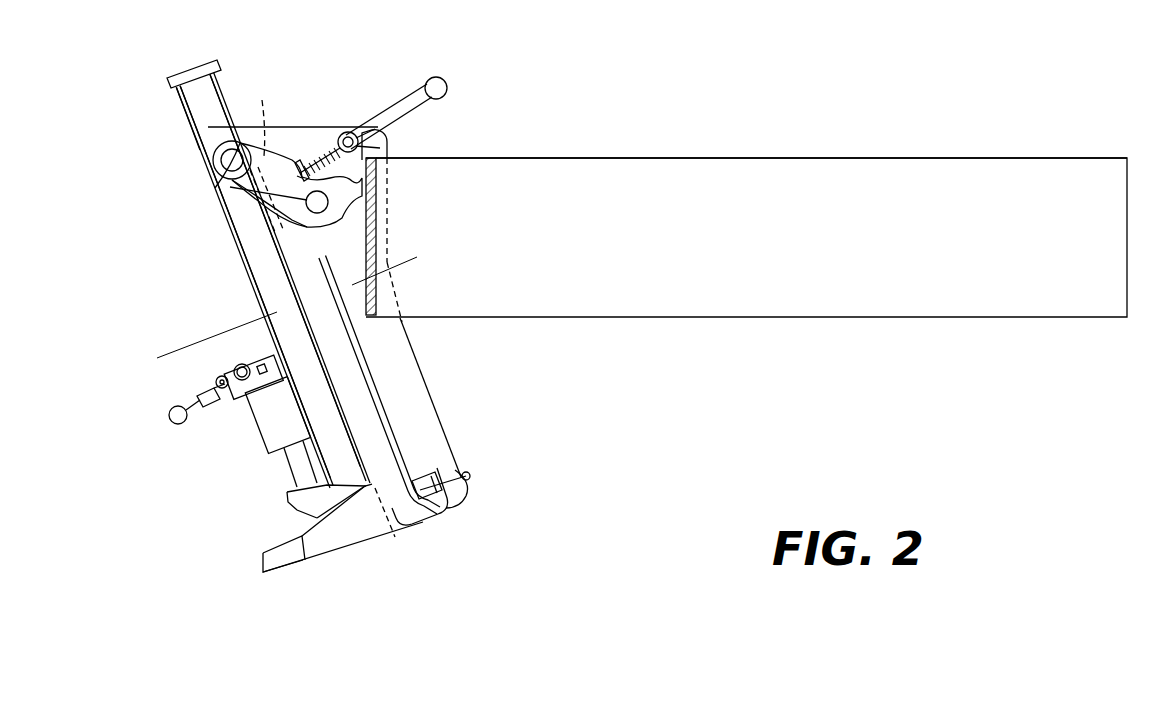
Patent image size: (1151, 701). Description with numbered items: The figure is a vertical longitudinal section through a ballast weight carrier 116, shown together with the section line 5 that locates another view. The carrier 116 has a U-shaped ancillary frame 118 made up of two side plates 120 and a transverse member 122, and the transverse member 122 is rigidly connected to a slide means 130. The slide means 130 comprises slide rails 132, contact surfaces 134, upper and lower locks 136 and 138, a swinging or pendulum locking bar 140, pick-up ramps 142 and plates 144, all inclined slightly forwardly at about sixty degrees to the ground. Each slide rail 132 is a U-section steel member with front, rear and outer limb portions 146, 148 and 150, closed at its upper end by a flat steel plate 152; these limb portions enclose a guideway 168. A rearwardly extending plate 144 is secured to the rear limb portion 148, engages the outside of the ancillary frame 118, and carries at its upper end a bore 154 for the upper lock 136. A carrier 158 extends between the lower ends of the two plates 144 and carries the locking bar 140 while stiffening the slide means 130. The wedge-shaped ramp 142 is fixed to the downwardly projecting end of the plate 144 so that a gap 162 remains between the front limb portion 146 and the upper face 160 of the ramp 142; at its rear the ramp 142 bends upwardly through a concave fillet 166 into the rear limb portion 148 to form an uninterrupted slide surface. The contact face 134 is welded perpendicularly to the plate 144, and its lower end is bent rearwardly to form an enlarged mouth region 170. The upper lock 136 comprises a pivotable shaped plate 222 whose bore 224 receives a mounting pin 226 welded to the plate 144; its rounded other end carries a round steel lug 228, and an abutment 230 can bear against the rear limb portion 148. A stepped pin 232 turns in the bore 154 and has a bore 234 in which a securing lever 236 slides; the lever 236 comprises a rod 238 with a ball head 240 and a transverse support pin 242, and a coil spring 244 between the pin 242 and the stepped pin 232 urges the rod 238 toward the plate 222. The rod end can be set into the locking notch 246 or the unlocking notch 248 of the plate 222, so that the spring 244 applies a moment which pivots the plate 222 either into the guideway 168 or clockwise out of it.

The section line 5- 5 is at (157, 380).
The ballast weight carrier 116 is at (723, 155).
The ancillary frame 118 is at (928, 156).
The side plate 120 is at (884, 254).
The transverse member 122 is at (378, 305).
The slide means 130 is at (208, 212).
The slide rail 132 is at (222, 76).
The contact surface 134 is at (378, 403).
The upper lock 136 is at (362, 106).
The lower lock 138 is at (262, 426).
The pendulum locking bar 140 is at (490, 523).
The pick-up ramp 142 is at (280, 572).
The plate 144 is at (313, 127).
The front limb portion 146 is at (254, 296).
The rear limb portion 148 is at (287, 258).
The outer limb portion 150 is at (180, 98).
The flat steel plate 152 is at (196, 62).
The bore 154 is at (361, 141).
The carrier 158 is at (428, 470).
The upper face 160 is at (280, 540).
The gap 162 is at (327, 480).
The concave fillet 166 is at (317, 517).
The guideway 168 is at (287, 339).
The mouth region 170 is at (412, 520).
The pivotable shaped plate 222 is at (292, 220).
The bore 224 is at (328, 203).
The mounting pin 226 is at (262, 205).
The round steel lug 228 is at (213, 155).
The abutment 230 is at (260, 156).
The stepped pin 232 is at (374, 152).
The bore 234 is at (374, 147).
The securing lever 236 is at (427, 56).
The rod 238 is at (446, 108).
The ball head 240 is at (446, 82).
The support pin 242 is at (298, 168).
The coil spring 244 is at (330, 152).
The locking notch 246 is at (215, 190).
The unlocking notch 248 is at (366, 166).